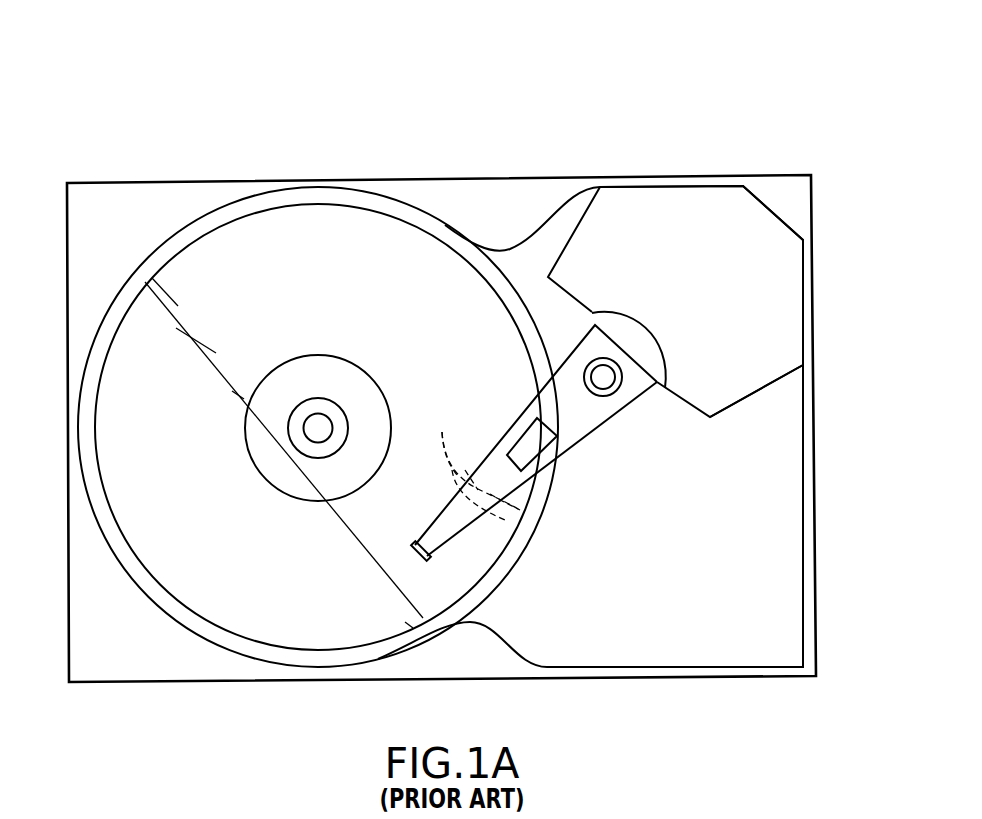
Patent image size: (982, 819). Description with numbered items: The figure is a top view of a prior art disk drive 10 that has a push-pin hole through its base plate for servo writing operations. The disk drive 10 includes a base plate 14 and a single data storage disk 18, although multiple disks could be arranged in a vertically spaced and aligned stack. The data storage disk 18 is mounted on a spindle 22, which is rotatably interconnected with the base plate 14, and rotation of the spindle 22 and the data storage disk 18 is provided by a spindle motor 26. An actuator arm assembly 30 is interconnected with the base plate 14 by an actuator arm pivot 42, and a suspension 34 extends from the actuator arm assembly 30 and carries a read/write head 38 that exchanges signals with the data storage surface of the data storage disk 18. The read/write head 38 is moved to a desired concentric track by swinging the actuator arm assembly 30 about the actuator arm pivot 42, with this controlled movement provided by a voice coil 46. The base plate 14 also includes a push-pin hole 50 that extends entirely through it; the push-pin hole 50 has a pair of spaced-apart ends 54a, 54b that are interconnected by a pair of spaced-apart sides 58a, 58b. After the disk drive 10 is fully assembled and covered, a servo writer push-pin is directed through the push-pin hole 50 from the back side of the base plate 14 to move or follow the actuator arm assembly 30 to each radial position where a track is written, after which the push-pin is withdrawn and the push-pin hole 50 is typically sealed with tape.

The disk drive 10 is at (784, 106).
The base plate 14 is at (815, 612).
The data storage disk 18 is at (320, 240).
The spindle 22 is at (365, 407).
The spindle motor 26 is at (317, 448).
The actuator arm assembly 30 is at (582, 406).
The suspension 34 is at (452, 520).
The read/write head 38 is at (416, 551).
The actuator arm pivot 42 is at (603, 377).
The voice coil 46 is at (778, 327).
The push-pin hole 50 is at (455, 467).
The end of push-pin hole 54a is at (448, 428).
The end of push-pin hole 54b is at (518, 511).
The side of push-pin hole 58a is at (483, 516).
The side of push-pin hole 58b is at (472, 465).